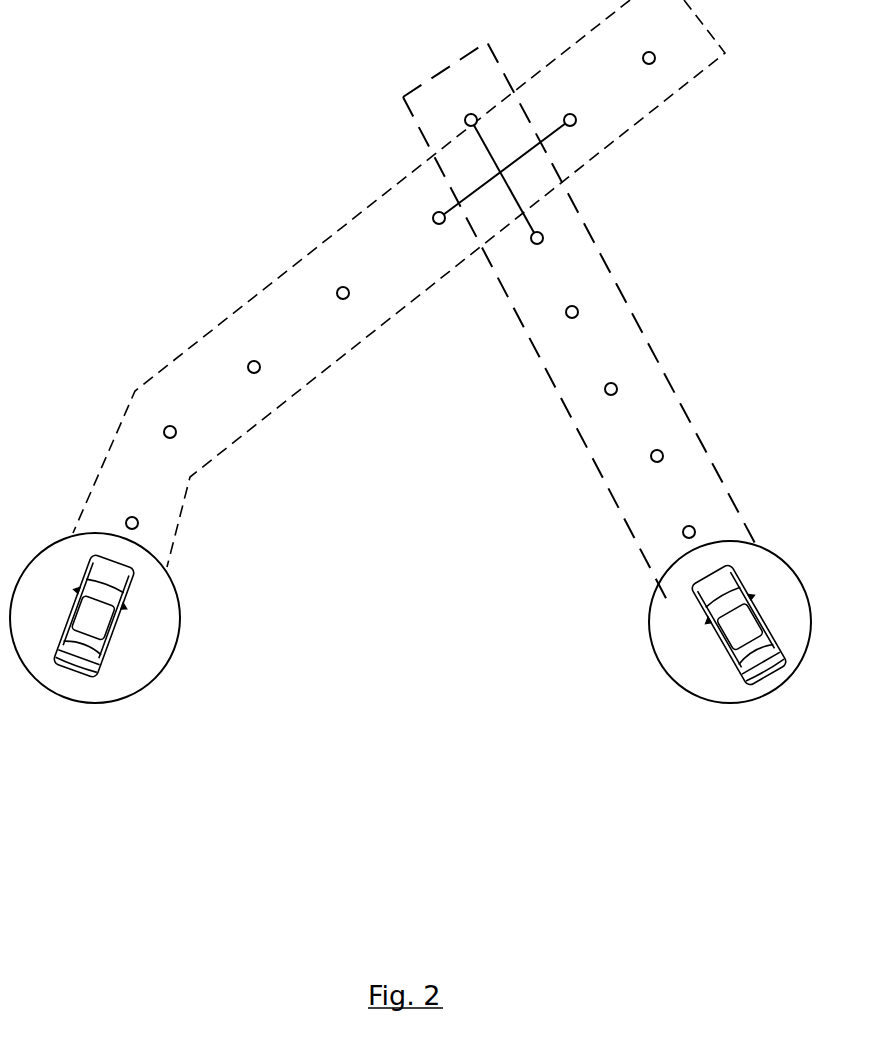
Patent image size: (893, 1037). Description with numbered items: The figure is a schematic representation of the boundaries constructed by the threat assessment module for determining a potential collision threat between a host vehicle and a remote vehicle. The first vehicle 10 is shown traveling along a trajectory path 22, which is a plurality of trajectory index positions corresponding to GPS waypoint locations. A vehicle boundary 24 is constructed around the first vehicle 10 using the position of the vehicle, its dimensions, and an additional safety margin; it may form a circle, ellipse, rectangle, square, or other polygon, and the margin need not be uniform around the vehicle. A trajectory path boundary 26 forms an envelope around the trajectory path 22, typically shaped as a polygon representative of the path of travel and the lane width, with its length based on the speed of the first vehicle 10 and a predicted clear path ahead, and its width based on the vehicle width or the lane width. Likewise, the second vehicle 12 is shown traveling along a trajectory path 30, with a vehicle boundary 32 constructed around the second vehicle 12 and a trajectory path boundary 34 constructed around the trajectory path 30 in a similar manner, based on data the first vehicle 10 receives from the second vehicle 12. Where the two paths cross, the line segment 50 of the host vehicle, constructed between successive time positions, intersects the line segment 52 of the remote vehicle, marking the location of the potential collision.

The first vehicle 10 is at (112, 647).
The second vehicle 12 is at (720, 648).
The trajectory path 22 is at (265, 386).
The vehicle boundary 24 is at (182, 617).
The trajectory path boundary 26 is at (272, 283).
The trajectory path 30 is at (589, 392).
The vehicle boundary 32 is at (648, 618).
The trajectory path boundary 34 is at (688, 417).
The line segment 50 is at (455, 207).
The line segment 52 is at (513, 195).